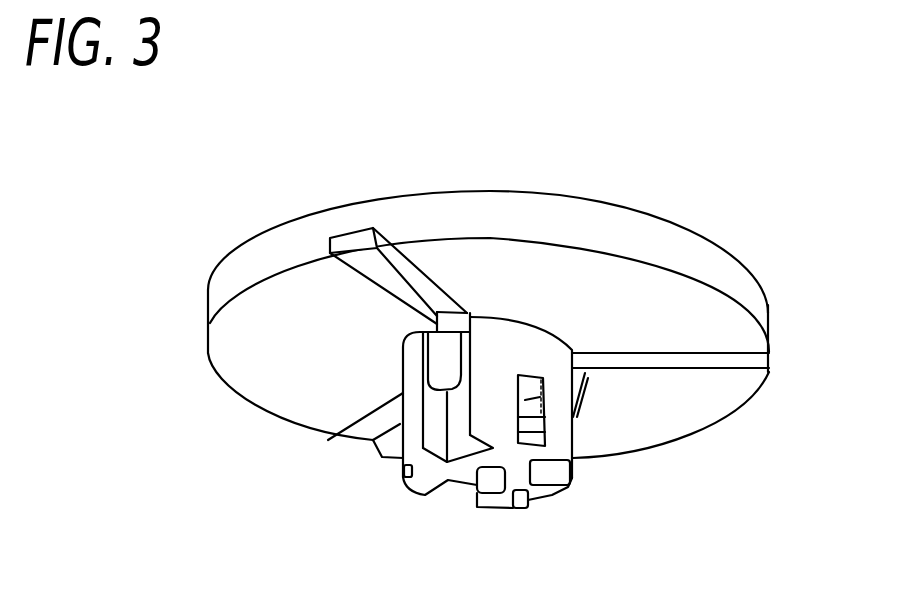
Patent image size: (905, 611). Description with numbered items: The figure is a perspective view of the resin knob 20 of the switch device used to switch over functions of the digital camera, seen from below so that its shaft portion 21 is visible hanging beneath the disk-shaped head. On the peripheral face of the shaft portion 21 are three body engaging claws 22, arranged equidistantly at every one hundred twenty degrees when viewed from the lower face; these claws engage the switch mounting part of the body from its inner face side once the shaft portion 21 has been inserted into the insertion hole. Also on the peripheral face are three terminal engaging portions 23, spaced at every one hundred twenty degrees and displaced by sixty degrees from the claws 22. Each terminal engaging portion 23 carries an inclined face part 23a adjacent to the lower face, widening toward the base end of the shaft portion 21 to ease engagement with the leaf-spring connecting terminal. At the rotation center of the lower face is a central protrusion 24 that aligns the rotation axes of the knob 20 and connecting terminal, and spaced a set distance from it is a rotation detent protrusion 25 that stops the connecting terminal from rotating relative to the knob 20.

The knob 20 is at (502, 210).
The shaft portion 21 is at (380, 455).
The body engaging claw 22 is at (442, 350).
The terminal engaging portion 23 is at (535, 392).
The inclined face part 23a is at (550, 443).
The central protrusion 24 is at (494, 486).
The rotation detent protrusion 25 is at (520, 502).